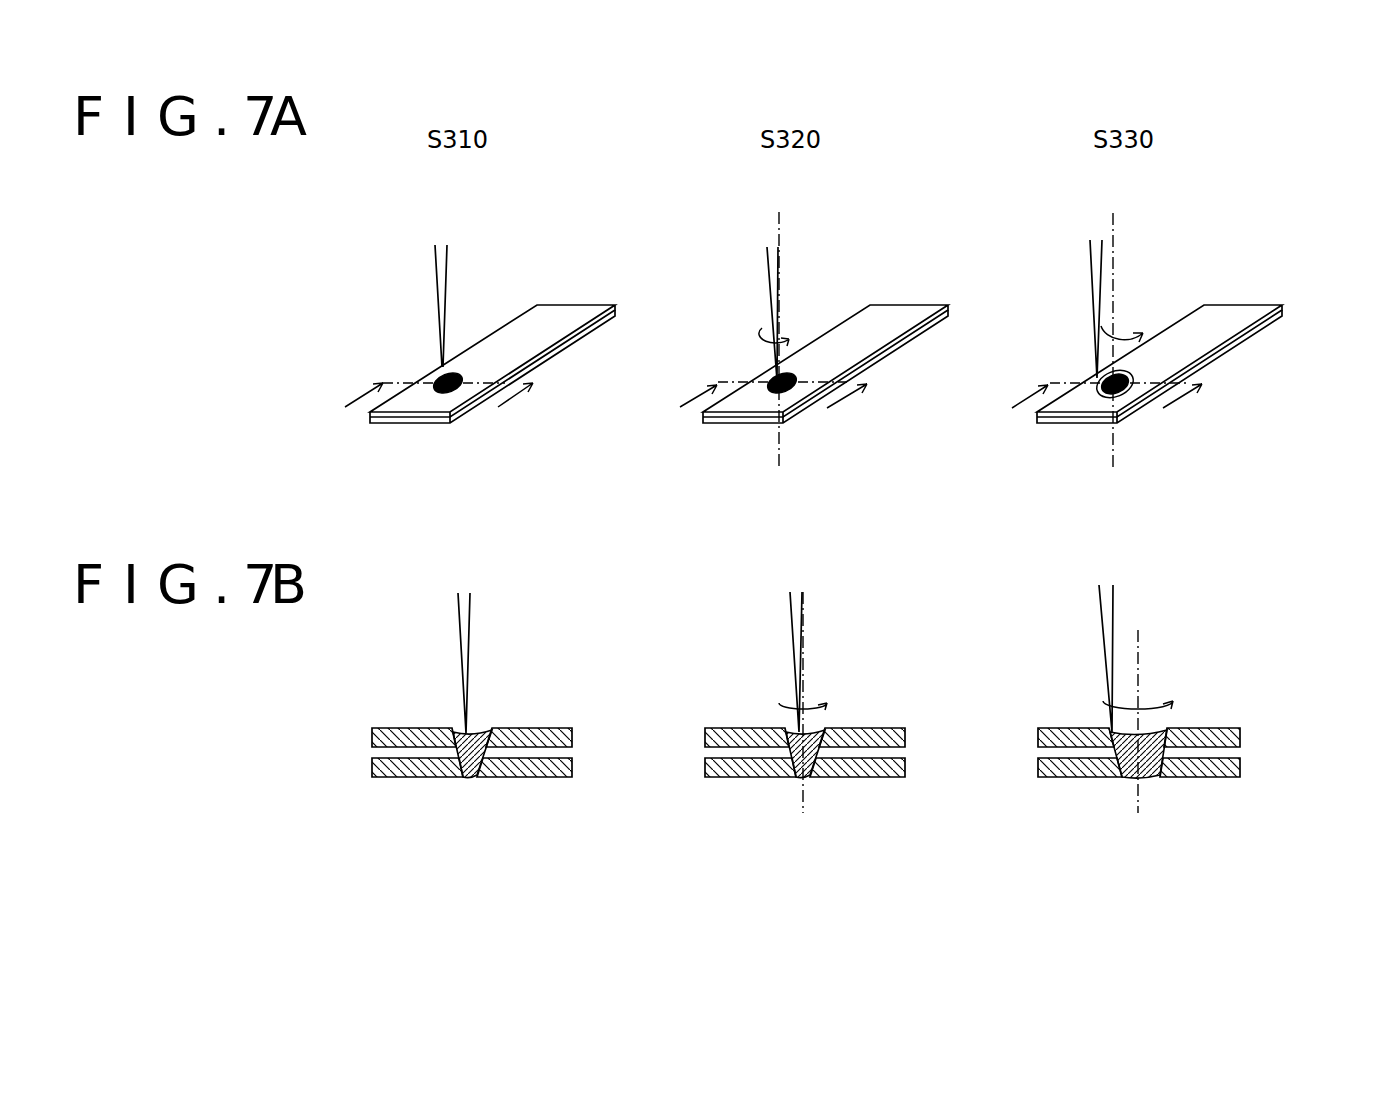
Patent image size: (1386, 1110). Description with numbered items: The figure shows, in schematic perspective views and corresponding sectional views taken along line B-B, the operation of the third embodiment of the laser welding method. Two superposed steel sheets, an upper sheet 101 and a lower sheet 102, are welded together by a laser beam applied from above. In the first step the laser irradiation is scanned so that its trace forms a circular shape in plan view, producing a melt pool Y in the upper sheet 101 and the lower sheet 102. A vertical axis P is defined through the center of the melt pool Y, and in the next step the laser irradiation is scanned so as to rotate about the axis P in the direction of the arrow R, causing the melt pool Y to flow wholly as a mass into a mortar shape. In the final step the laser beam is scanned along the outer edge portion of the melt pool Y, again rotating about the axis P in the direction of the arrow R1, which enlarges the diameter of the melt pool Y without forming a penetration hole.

In FIG. 7A, the upper sheet 101 is at (615, 307).
In FIG. 7B, the upper sheet 101 is at (372, 735).
In FIG. 7A, the lower sheet 102 is at (615, 315).
In FIG. 7B, the lower sheet 102 is at (372, 767).
In FIG. 7A, the melt pool Y is at (453, 393).
In FIG. 7B, the melt pool Y is at (470, 777).
In FIG. 7A, the axis P is at (944, 328).
In FIG. 7B, the axis P is at (979, 702).
In FIG. 7A, the arrow R is at (785, 326).
In FIG. 7B, the arrow R is at (806, 690).
In FIG. 7A, the arrow R1 is at (1130, 324).
In FIG. 7B, the arrow R1 is at (1143, 690).
In FIG. 7A, the line B- B is at (765, 408).